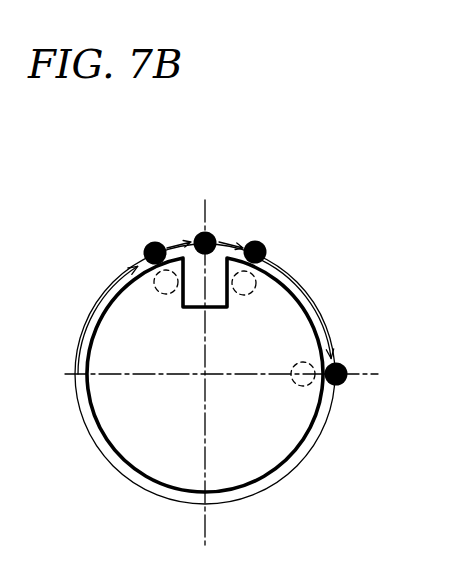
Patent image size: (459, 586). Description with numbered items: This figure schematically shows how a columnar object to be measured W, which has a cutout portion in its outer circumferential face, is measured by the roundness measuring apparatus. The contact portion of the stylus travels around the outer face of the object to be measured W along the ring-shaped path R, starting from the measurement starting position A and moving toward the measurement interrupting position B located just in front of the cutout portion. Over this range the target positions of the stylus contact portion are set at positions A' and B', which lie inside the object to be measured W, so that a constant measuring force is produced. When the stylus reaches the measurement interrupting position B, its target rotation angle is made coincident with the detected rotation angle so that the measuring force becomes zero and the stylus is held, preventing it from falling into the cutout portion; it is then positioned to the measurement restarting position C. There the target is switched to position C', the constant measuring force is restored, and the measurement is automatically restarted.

The measurement starting position A is at (365, 355).
The measurement interrupting position B is at (142, 223).
The measurement restarting position C is at (272, 223).
The target position of the stylus contact portion A' is at (278, 388).
The target position of the stylus contact portion B' is at (156, 315).
The target position of the stylus contact portion C' is at (239, 315).
The object to be measured W is at (323, 322).
The ring R is at (303, 463).